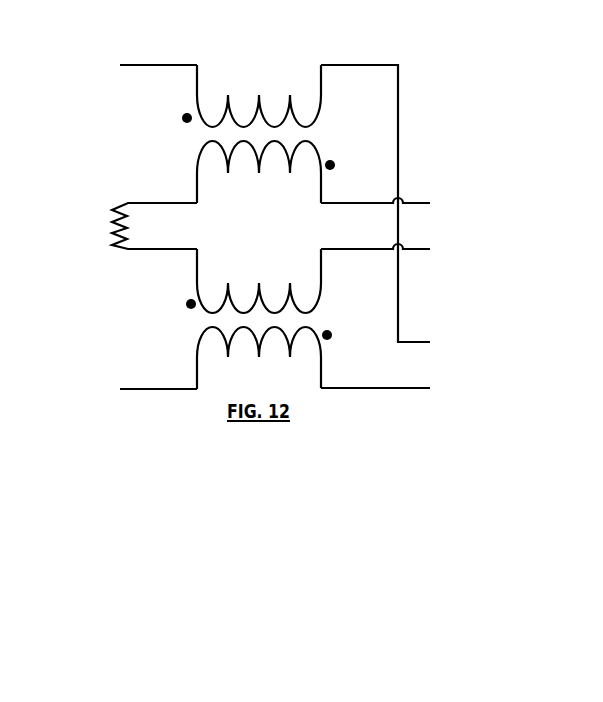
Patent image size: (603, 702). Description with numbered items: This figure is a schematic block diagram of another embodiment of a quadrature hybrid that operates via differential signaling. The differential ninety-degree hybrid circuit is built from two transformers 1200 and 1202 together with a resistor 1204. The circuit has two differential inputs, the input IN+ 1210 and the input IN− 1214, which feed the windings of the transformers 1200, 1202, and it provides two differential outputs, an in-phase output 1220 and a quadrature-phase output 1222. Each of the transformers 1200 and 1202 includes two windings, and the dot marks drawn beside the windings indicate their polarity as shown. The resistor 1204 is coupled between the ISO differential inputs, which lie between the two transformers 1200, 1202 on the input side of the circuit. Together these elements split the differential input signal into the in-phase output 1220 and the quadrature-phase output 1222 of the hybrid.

The transformer 1200 is at (285, 81).
The transformer 1202 is at (278, 275).
The resistor 1204 is at (154, 226).
The differential input IN+ 1210 is at (150, 42).
The differential input IN− 1214 is at (150, 366).
The in-phase output 1220 is at (434, 226).
The quadrature-phase output 1222 is at (437, 230).